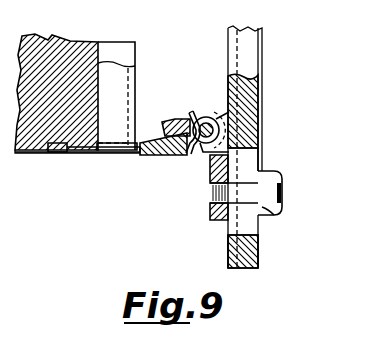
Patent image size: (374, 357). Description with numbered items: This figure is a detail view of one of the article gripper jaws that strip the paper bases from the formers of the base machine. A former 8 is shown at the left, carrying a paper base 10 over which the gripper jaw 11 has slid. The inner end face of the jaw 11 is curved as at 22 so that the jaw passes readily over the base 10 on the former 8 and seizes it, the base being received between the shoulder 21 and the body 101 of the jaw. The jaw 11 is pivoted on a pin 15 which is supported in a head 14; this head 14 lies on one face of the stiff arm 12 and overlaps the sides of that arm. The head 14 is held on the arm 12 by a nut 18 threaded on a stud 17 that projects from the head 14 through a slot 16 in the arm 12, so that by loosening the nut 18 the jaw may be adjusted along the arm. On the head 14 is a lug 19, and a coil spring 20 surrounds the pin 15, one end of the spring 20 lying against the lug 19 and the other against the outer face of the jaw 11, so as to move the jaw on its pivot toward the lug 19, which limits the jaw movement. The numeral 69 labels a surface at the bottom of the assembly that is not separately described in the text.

The former 8 is at (57, 43).
The paper base 10 is at (122, 80).
The gripper jaw 11 is at (92, 153).
The curved inner end face 22 is at (67, 150).
The shoulder 21 is at (100, 150).
The base surface 69 is at (40, 153).
The body 101 is at (153, 158).
The lug 19 is at (173, 122).
The coil spring 20 is at (188, 116).
The pin 15 is at (206, 124).
The arm 12 is at (255, 64).
The slot 16 is at (250, 163).
The head 14 is at (211, 170).
The stud 17 is at (284, 193).
The nut 18 is at (276, 211).